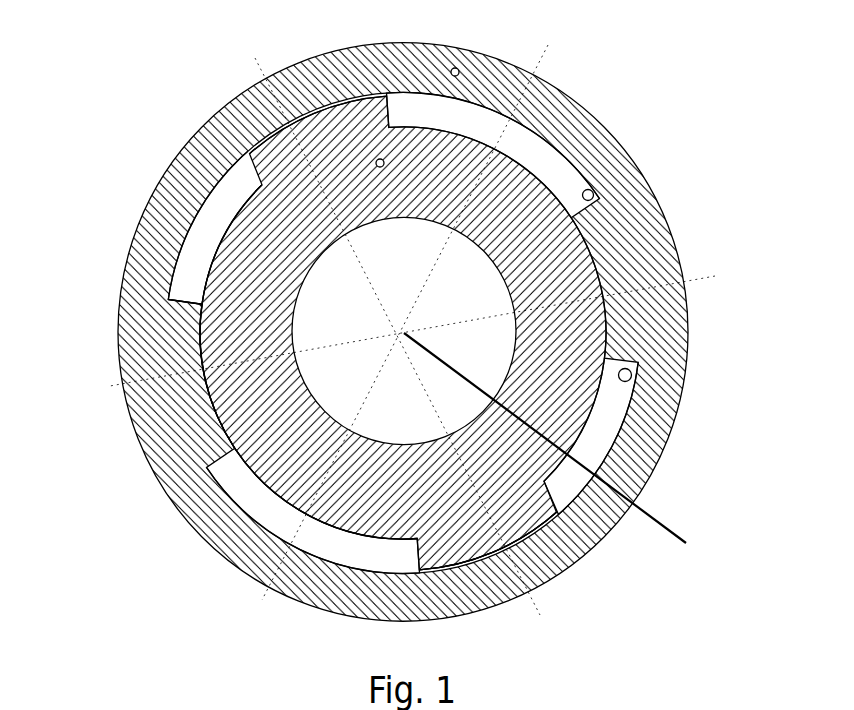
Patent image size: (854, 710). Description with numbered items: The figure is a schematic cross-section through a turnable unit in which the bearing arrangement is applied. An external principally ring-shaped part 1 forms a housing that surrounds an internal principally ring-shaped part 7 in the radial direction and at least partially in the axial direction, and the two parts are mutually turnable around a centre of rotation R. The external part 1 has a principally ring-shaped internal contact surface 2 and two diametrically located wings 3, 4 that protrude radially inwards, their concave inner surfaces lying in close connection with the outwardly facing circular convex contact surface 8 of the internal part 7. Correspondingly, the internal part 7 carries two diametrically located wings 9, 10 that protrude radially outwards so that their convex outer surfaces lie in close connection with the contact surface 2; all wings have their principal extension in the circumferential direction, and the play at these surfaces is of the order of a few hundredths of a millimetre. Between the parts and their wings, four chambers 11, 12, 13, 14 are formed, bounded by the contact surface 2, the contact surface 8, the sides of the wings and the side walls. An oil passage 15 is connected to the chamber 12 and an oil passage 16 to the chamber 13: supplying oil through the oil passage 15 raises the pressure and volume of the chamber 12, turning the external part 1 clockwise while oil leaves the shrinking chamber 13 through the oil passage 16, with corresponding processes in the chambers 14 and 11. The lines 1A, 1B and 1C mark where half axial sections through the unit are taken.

The external principally ring-shaped part 1 is at (232, 138).
The internal contact surface 2 is at (195, 301).
The wing 3 is at (195, 359).
The wing 4 is at (605, 262).
The internal principally ring-shaped part 7 is at (292, 460).
The contact surface 8 is at (352, 529).
The wing 9 is at (520, 509).
The wing 10 is at (345, 108).
The chamber 11 is at (222, 210).
The chamber 12 is at (545, 163).
The chamber 13 is at (600, 433).
The chamber 14 is at (260, 507).
The oil passage 15 is at (593, 194).
The oil passage 16 is at (630, 378).
The centre of rotation R is at (551, 448).
The section line 1A- 1A is at (721, 308).
The section line 1B- 1B is at (275, 50).
The section line 1C- 1C is at (550, 42).